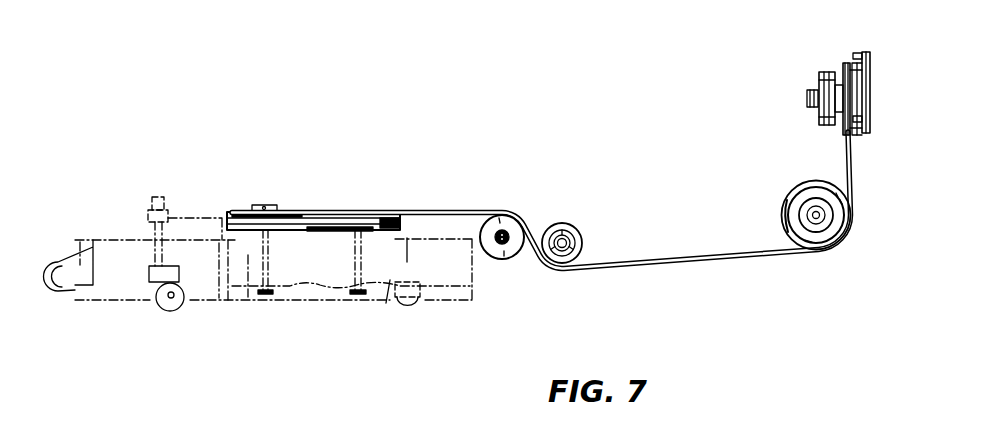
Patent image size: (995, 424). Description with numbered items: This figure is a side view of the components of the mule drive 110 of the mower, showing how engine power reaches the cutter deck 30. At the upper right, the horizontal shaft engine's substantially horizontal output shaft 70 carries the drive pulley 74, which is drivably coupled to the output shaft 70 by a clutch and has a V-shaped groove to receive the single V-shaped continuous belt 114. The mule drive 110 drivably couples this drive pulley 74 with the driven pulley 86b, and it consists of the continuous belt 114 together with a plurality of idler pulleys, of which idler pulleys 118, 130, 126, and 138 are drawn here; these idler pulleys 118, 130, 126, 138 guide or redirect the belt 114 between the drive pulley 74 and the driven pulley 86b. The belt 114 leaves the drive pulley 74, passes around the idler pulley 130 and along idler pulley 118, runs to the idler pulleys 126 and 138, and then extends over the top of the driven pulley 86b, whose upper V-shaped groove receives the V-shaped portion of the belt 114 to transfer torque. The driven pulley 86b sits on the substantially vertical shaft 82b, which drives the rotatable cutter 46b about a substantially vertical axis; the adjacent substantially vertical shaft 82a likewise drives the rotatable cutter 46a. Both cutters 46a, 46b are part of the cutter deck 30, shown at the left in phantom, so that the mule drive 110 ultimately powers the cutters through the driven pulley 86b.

The cutter deck 30 is at (127, 293).
The rotatable cutter 46b is at (203, 293).
The rotatable cutter 46a is at (403, 292).
The substantially vertical shaft 82b is at (266, 250).
The substantially vertical shaft 82a is at (395, 250).
The driven pulley 86b is at (238, 209).
The V-shaped continuous belt 114 is at (715, 262).
The idler pulley 138 is at (500, 256).
The idler pulley 126 is at (580, 223).
The idler pulley 118 is at (783, 219).
The idler pulley 130 is at (818, 181).
The output shaft 70 is at (806, 98).
The drive pulley 74 is at (840, 63).
The mule drive 110 is at (604, 146).